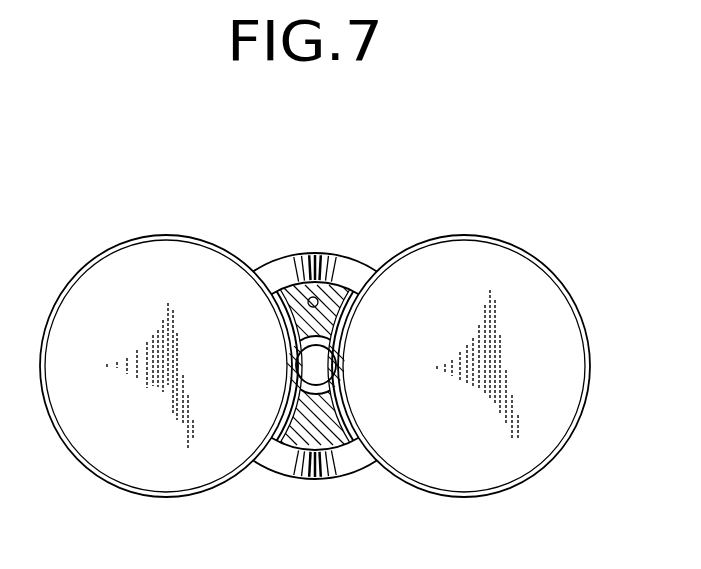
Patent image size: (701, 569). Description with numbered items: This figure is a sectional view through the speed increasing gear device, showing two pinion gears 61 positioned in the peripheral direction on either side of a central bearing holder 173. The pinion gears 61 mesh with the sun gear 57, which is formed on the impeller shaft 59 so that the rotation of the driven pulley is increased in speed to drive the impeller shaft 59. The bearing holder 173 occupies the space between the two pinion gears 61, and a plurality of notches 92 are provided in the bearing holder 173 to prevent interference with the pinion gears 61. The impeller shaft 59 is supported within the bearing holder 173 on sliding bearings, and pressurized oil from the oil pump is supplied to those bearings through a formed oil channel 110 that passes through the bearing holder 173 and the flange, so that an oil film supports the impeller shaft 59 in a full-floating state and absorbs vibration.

The pinion gear 61 is at (103, 268).
The bearing holder 173 is at (328, 243).
The oil channel 110 is at (310, 298).
The notch 92 is at (280, 316).
The sun gear 57 is at (289, 374).
The impeller shaft 59 is at (335, 372).